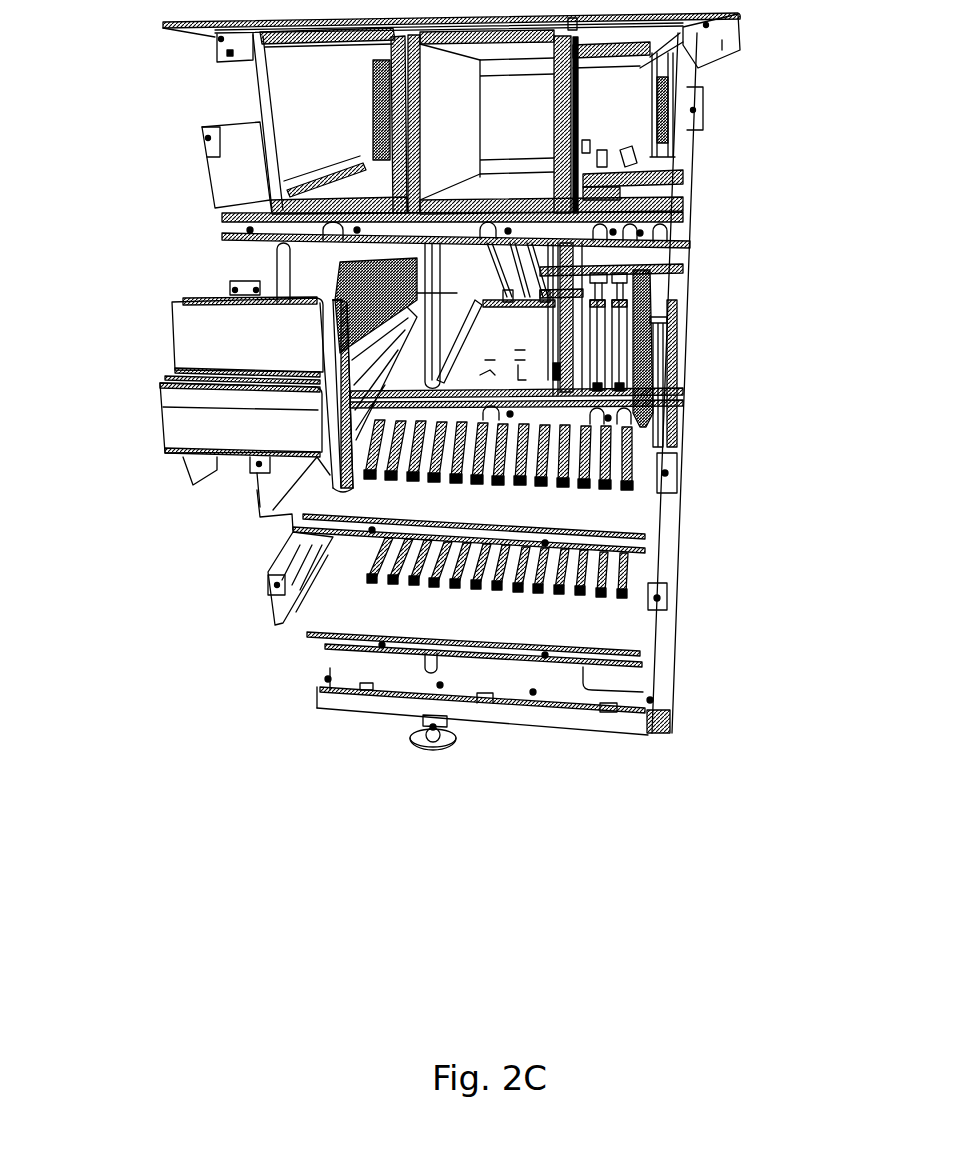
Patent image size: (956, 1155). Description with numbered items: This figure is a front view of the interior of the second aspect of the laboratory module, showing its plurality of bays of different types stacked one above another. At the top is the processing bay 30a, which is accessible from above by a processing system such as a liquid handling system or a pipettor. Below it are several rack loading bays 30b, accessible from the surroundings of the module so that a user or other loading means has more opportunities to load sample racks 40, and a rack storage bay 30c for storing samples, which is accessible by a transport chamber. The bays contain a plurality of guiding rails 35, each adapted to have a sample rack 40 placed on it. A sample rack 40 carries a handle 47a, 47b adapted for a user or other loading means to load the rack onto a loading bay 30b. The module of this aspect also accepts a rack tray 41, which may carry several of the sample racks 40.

The processing bay 30a is at (626, 115).
The loading bay 30b is at (320, 265).
The storage bay 30c is at (628, 600).
The guiding rails 35 is at (380, 553).
The sample rack 40 is at (687, 303).
The rack tray 41 is at (203, 338).
The handle 47a is at (657, 397).
The handle 47b is at (198, 421).